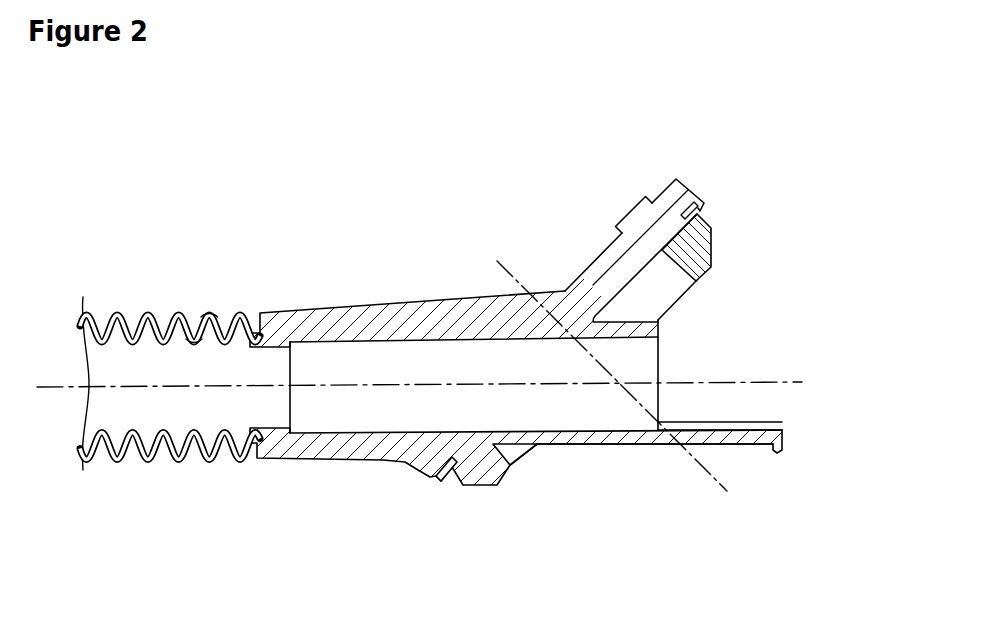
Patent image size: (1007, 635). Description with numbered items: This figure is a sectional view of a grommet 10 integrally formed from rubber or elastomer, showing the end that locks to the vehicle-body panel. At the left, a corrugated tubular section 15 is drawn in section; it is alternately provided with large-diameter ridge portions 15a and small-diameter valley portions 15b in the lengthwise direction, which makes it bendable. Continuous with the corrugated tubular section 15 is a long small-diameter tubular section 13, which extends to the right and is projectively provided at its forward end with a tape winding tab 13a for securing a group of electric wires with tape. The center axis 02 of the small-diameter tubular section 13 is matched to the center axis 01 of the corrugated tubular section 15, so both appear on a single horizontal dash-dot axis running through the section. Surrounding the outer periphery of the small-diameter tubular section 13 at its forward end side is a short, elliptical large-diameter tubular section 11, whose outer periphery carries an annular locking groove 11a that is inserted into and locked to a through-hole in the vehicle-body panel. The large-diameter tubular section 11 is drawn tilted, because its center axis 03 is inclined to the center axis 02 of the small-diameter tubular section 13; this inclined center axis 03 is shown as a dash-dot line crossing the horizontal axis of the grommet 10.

The grommet 10 is at (459, 345).
The large-diameter tubular section 11 is at (682, 216).
The locking groove 11a is at (701, 210).
The small-diameter tubular section 13 is at (375, 307).
The tape winding tab 13a is at (728, 443).
The corrugated tubular section 15 is at (114, 313).
The ridge portion 15a is at (208, 313).
The valley portion 15b is at (194, 327).
The center axis of the corrugated tubular section 01 is at (459, 383).
The center axis of the small-diameter tubular section 02 is at (419, 384).
The center axis of the large-diameter tubular section 03 is at (627, 389).